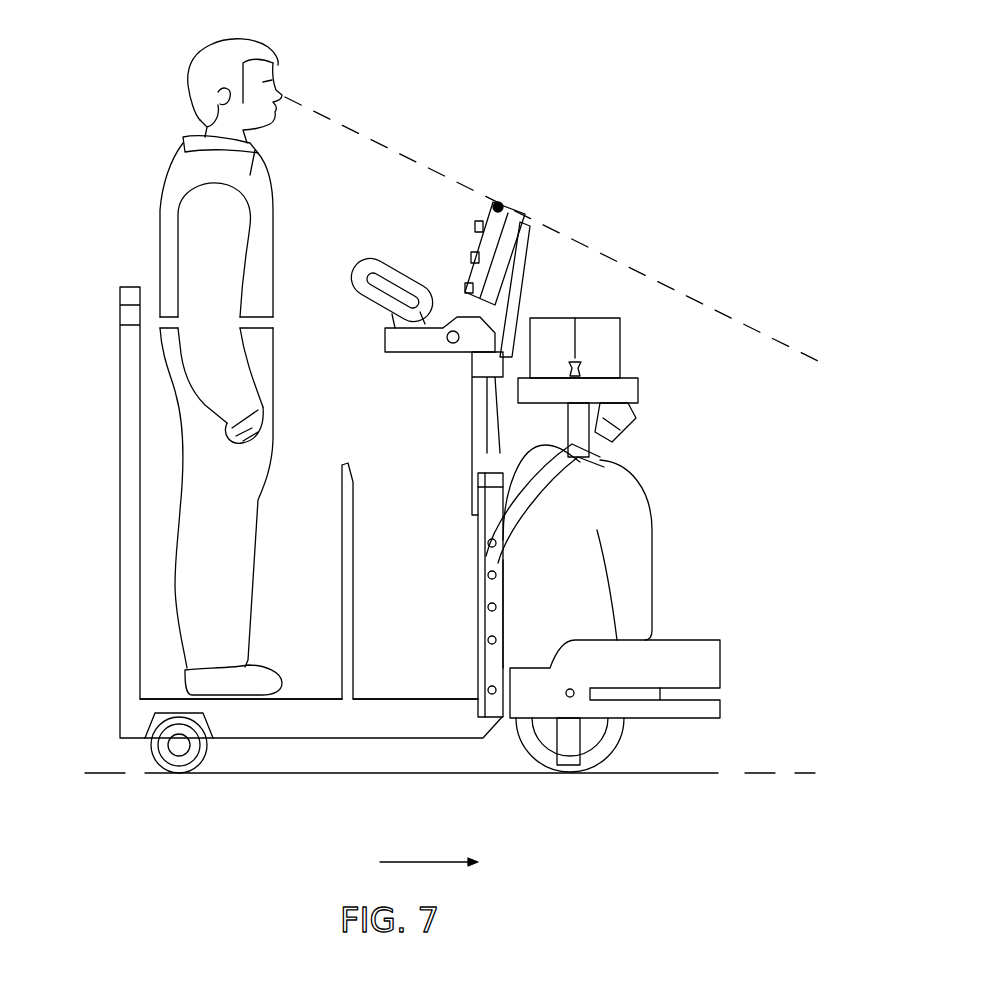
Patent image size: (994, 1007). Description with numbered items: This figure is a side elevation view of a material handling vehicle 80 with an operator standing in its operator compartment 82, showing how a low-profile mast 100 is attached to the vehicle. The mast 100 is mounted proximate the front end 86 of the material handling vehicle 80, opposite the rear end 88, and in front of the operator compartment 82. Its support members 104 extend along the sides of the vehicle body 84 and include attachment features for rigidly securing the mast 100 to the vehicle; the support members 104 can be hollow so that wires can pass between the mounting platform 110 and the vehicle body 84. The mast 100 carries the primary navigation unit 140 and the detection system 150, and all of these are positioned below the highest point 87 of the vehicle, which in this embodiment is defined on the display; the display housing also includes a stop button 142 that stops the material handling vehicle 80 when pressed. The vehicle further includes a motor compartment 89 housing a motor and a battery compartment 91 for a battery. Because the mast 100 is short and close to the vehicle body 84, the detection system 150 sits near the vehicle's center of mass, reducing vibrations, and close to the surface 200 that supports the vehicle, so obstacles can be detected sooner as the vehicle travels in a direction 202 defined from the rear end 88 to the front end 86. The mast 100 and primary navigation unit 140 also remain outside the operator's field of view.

The material handling vehicle 80 is at (370, 722).
The operator compartment 82 is at (303, 640).
The vehicle body 84 is at (645, 580).
The front end 86 is at (688, 527).
The highest point 87 is at (495, 207).
The rear end 88 is at (96, 566).
The motor compartment 89 is at (572, 612).
The battery compartment 91 is at (410, 670).
The mast 100 is at (603, 490).
The support members 104 is at (487, 590).
The mounting platform 110 is at (630, 390).
The primary navigation unit 140 is at (545, 318).
The stop button 142 is at (478, 228).
The detection system 150 is at (630, 432).
The surface 200 is at (285, 773).
The direction 202 is at (425, 855).